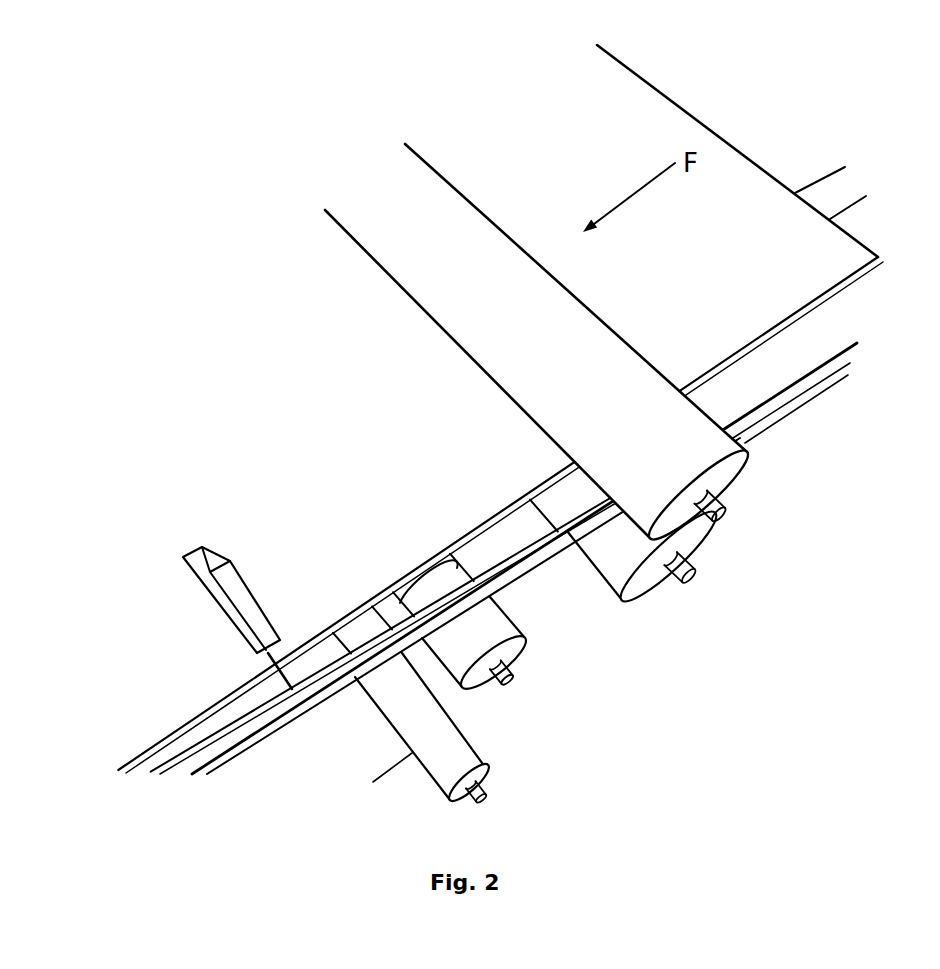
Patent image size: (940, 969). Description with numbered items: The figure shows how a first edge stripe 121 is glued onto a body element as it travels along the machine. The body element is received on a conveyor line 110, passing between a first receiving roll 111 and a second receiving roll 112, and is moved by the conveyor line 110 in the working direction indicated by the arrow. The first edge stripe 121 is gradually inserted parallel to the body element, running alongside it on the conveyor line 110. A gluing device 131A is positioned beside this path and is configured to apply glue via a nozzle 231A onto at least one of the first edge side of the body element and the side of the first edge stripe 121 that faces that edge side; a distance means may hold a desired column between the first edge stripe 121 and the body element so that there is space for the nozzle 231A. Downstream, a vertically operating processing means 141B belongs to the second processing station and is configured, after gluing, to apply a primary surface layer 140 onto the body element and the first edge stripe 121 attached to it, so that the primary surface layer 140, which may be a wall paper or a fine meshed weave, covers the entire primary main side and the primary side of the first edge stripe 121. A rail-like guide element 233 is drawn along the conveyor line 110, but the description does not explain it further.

The conveyor line 110 is at (827, 173).
The first receiving roll 111 is at (643, 583).
The second receiving roll 112 is at (393, 193).
The first edge stripe 121 is at (792, 412).
The gluing device 131A is at (202, 557).
The nozzle 231A is at (267, 665).
The rail 233 is at (217, 735).
The primary surface layer 140 is at (442, 690).
The vertically operating processing means 141B is at (517, 650).